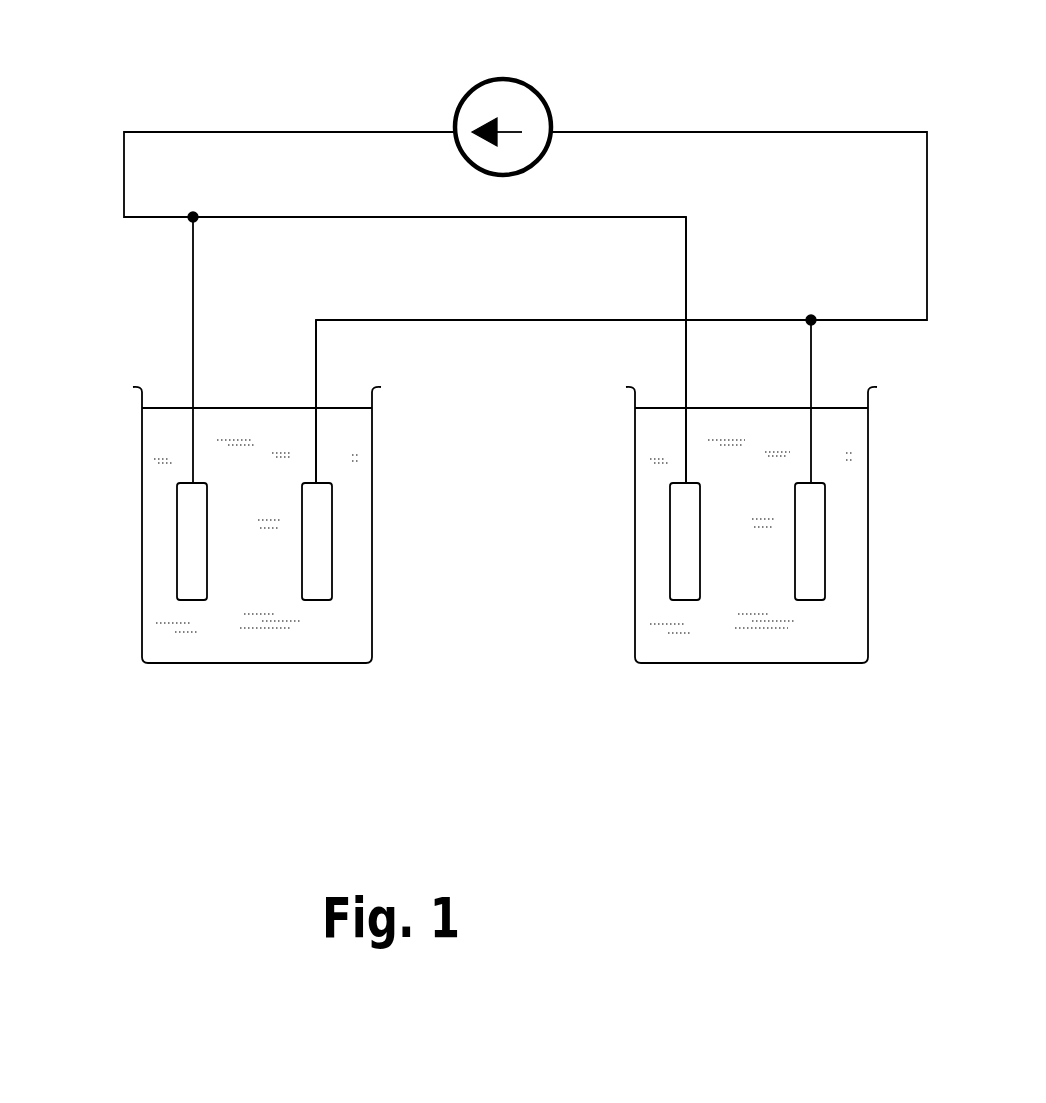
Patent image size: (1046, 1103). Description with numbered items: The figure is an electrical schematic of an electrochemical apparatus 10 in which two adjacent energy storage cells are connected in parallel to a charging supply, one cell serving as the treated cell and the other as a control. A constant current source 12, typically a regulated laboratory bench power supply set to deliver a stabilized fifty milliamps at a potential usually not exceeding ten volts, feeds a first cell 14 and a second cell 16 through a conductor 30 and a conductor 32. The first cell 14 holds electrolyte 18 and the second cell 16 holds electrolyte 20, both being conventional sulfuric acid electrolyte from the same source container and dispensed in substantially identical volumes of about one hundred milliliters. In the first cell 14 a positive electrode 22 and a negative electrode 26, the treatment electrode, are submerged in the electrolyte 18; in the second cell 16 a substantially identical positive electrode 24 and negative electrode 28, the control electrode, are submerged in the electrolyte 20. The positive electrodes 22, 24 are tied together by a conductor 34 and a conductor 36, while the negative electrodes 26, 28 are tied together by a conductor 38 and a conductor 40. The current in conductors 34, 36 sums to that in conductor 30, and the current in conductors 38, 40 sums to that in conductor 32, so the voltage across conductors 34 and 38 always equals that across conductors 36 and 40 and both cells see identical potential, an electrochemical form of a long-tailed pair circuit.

The electrochemical apparatus 10 is at (666, 49).
The constant current source 12 is at (476, 88).
The first cell 14 is at (375, 463).
The second cell 16 is at (869, 460).
The electrolyte 18 is at (235, 622).
The electrolyte 20 is at (753, 615).
The positive electrode 22 is at (190, 555).
The positive electrode 24 is at (683, 525).
The negative electrode 26 is at (322, 577).
The negative electrode 28 is at (815, 575).
The conductor 30 is at (167, 130).
The conductor 32 is at (750, 131).
The conductor 34 is at (195, 333).
The conductor 36 is at (690, 368).
The conductor 38 is at (318, 347).
The conductor 40 is at (812, 365).